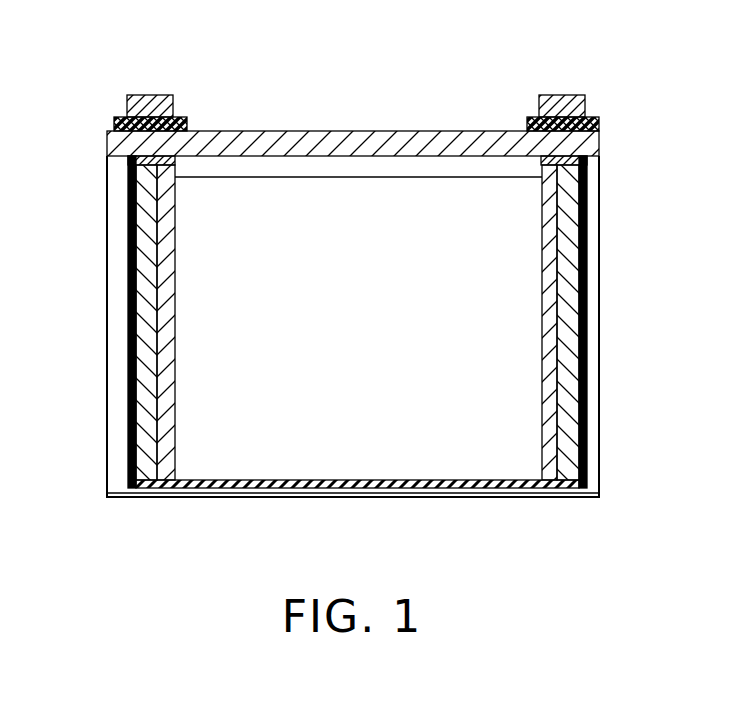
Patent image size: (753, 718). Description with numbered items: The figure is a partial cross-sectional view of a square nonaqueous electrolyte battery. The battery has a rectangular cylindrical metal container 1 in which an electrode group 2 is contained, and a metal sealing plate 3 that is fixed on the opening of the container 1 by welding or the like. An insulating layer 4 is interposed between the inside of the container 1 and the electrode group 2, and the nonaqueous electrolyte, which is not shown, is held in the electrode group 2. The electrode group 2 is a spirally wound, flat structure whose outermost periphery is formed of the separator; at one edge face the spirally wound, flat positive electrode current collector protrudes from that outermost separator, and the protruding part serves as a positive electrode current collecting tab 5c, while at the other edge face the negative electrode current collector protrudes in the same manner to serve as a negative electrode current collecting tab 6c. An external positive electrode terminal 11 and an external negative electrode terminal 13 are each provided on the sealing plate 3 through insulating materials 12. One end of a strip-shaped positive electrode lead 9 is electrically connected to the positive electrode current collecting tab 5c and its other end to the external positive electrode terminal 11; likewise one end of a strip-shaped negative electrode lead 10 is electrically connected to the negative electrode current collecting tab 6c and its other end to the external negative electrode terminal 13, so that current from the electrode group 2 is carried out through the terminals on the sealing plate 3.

The metal container 1 is at (323, 497).
The electrode group 2 is at (423, 468).
The metal sealing plate 3 is at (379, 131).
The insulating layer 4 is at (128, 434).
The positive electrode current collecting tab 5c is at (170, 474).
The negative electrode current collecting tab 6c is at (553, 476).
The positive electrode lead 9 is at (147, 369).
The negative electrode lead 10 is at (572, 371).
The external positive electrode terminal 11 is at (150, 94).
The insulating materials 12 is at (115, 127).
The external negative electrode terminal 13 is at (561, 94).